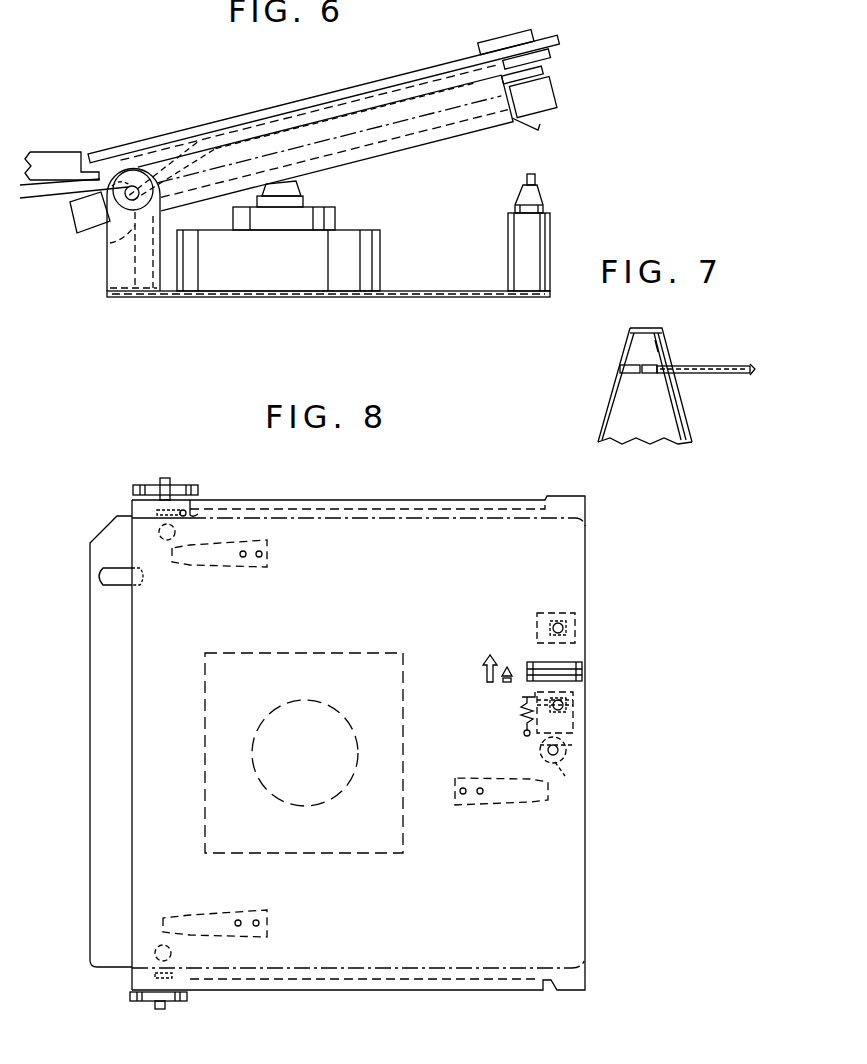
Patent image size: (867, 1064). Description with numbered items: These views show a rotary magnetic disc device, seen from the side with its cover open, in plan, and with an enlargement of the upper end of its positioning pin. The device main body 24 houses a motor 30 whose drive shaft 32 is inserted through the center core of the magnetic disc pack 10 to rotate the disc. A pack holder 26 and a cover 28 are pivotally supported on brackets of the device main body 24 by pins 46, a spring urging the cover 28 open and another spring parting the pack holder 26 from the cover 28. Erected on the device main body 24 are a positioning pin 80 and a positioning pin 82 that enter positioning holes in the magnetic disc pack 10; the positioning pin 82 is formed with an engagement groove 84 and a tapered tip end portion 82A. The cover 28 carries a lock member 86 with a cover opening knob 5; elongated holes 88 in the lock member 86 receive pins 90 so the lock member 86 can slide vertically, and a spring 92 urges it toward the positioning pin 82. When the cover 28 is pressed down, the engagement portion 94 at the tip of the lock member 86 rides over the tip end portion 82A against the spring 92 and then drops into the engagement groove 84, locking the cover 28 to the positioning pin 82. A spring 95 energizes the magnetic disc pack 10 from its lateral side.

In FIG. 6, the knob 5 is at (480, 43).
In FIG. 8, the knob 5 is at (530, 660).
In FIG. 6, the magnetic disc pack 10 is at (555, 90).
In FIG. 8, the magnetic disc pack 10 is at (108, 779).
In FIG. 6, the device main body 24 is at (385, 297).
In FIG. 6, the pack holder 26 is at (467, 138).
In FIG. 6, the cover 28 is at (212, 132).
In FIG. 6, the motor 30 is at (383, 263).
In FIG. 6, the drive shaft 32 is at (300, 189).
In FIG. 6, the pins 46 is at (75, 188).
In FIG. 8, the pins 46 is at (163, 478).
In FIG. 6, the positioning pin 80 is at (128, 245).
In FIG. 6, the positioning pin 82 is at (520, 232).
In FIG. 7, the positioning pin 82 is at (627, 408).
In FIG. 8, the positioning pin 82 is at (566, 778).
In FIG. 7, the tip end portion 82A is at (665, 350).
In FIG. 6, the engagement groove 84 is at (541, 185).
In FIG. 7, the engagement groove 84 is at (620, 367).
In FIG. 6, the lock member 86 is at (507, 33).
In FIG. 8, the lock member 86 is at (600, 675).
In FIG. 8, the elongated holes 88 is at (573, 637).
In FIG. 8, the pins 90 is at (583, 618).
In FIG. 8, the spring 92 is at (520, 727).
In FIG. 7, the engagement portion 94 is at (698, 350).
In FIG. 8, the engagement portion 94 is at (580, 745).
In FIG. 8, the spring 95 is at (192, 512).